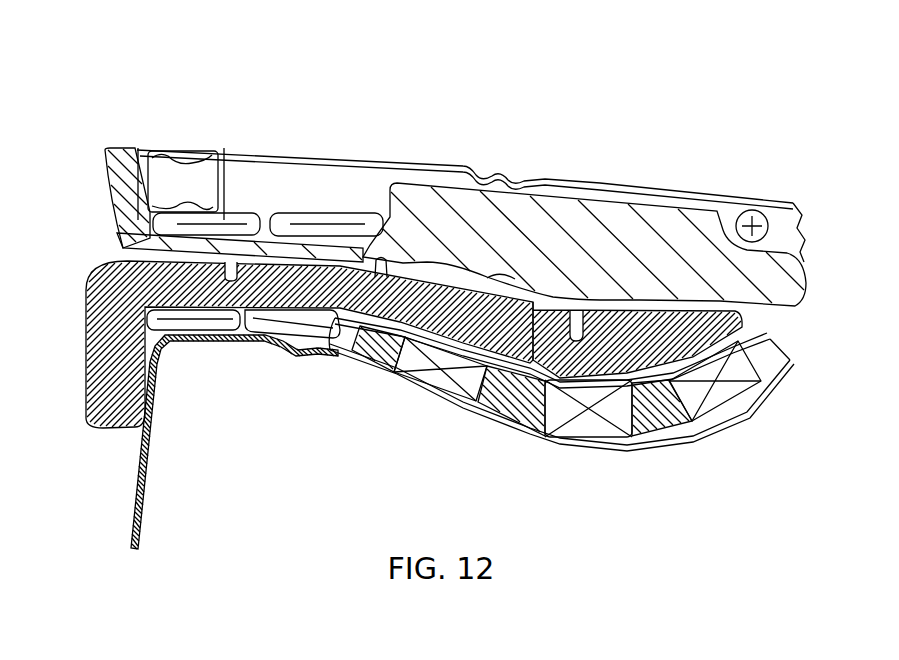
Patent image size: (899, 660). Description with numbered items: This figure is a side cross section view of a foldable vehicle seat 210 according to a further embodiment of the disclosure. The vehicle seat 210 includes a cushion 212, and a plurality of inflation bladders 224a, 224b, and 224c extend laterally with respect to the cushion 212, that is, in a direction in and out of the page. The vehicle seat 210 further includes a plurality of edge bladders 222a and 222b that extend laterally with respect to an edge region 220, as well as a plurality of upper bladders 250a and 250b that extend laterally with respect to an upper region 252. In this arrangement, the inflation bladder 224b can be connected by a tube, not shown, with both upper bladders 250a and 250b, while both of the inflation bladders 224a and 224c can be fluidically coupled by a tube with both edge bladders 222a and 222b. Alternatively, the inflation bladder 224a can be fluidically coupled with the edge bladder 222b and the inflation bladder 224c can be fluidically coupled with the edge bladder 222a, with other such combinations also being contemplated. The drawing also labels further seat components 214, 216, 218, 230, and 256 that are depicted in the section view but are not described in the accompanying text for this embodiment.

The vehicle seat 210 is at (700, 101).
The cushion 212 is at (370, 389).
The hatched support member 214 is at (640, 347).
The thin sheet member 216 is at (530, 362).
The upper body member 218 is at (580, 290).
The edge region 220 is at (122, 258).
The edge bladder 222a is at (197, 327).
The edge bladder 222b is at (303, 333).
The inflation bladder 224a is at (437, 380).
The inflation bladder 224b is at (587, 427).
The inflation bladder 224c is at (730, 385).
The top strip 230 is at (692, 183).
The upper bladder 250a is at (247, 217).
The upper bladder 250b is at (323, 217).
The upper region 252 is at (366, 255).
The end block 256 is at (117, 175).